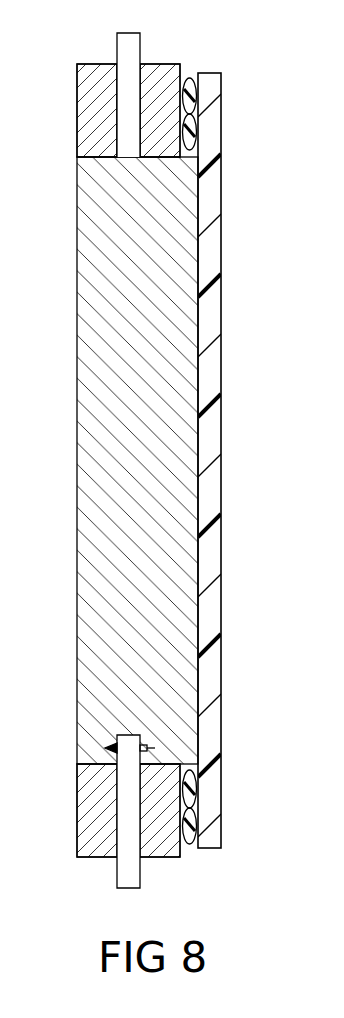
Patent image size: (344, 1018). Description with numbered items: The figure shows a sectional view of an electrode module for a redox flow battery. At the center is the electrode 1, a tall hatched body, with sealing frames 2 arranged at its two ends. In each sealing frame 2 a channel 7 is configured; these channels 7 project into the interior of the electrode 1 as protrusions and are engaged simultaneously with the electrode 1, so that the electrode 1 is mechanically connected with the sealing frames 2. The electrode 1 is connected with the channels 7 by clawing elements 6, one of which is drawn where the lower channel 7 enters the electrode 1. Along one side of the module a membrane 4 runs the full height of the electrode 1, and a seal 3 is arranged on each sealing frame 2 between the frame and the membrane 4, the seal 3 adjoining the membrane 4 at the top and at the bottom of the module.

The electrode 1 is at (107, 481).
The sealing frame 2 is at (98, 845).
The seal 3 is at (188, 82).
The membrane 4 is at (213, 479).
The clawing element 6 is at (147, 748).
The channel 7 is at (127, 55).